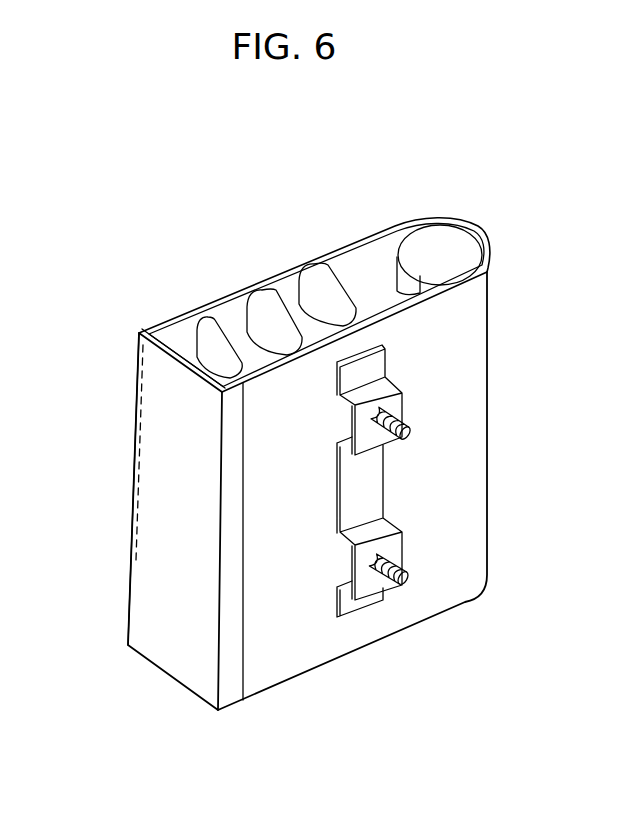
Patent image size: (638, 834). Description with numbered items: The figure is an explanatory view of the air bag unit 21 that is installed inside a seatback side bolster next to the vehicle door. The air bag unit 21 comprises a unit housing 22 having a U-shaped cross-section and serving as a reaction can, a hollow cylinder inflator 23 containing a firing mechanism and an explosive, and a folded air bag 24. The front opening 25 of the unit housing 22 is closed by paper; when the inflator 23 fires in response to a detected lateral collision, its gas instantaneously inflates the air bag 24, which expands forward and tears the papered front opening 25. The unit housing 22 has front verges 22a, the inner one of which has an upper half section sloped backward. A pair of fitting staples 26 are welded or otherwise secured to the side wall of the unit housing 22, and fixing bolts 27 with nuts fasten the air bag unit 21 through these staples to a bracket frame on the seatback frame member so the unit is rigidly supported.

The air bag unit 21 is at (201, 279).
The unit housing 22 is at (348, 237).
The front verges 22a is at (135, 378).
The inflator 23 is at (442, 247).
The air bag 24 is at (263, 284).
The front opening 25 is at (150, 514).
The fitting staples 26 is at (402, 402).
The fixing bolts 27 is at (410, 434).